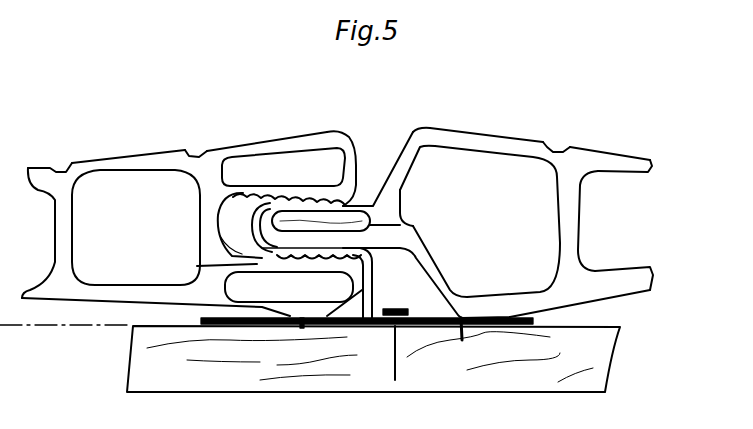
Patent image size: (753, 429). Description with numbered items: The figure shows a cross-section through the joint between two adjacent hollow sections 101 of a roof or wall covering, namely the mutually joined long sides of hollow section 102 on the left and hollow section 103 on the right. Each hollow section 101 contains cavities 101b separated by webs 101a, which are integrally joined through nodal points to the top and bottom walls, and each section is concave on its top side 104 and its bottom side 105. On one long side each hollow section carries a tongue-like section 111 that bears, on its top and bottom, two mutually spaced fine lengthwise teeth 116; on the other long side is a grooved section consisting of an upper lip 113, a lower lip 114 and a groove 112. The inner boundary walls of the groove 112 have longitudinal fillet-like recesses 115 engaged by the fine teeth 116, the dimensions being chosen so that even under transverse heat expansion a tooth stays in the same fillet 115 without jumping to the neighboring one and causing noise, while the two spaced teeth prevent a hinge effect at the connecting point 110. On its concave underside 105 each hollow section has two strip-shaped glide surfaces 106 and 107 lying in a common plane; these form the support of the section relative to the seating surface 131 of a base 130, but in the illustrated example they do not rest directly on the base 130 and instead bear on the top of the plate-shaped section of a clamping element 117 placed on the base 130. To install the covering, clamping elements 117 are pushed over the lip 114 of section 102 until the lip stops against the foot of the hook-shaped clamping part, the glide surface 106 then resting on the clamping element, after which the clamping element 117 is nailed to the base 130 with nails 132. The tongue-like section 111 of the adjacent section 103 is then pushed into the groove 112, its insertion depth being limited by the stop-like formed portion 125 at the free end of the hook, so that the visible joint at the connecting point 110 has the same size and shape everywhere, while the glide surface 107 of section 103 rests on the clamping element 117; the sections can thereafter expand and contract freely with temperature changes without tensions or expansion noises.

The hollow section 101 is at (163, 130).
The web 101a is at (200, 208).
The cavity 101b is at (130, 180).
The hollow section 102 is at (99, 165).
The hollow section 103 is at (578, 155).
The top side 104 is at (187, 148).
The bottom side 105 is at (72, 306).
The glide surface 106 is at (302, 326).
The glide surface 107 is at (461, 330).
The connecting point 110 is at (373, 126).
The tongue-like section 111 is at (363, 209).
The groove 112 is at (235, 210).
The upper lip 113 is at (300, 138).
The lower lip 114 is at (207, 267).
The fillet-like recess 115 is at (265, 197).
The lengthwise tooth 116 is at (305, 199).
The clamping element 117 is at (376, 283).
The formed portion 125 is at (405, 217).
The base 130 is at (133, 354).
The seating surface 131 is at (30, 327).
The nail 132 is at (397, 310).